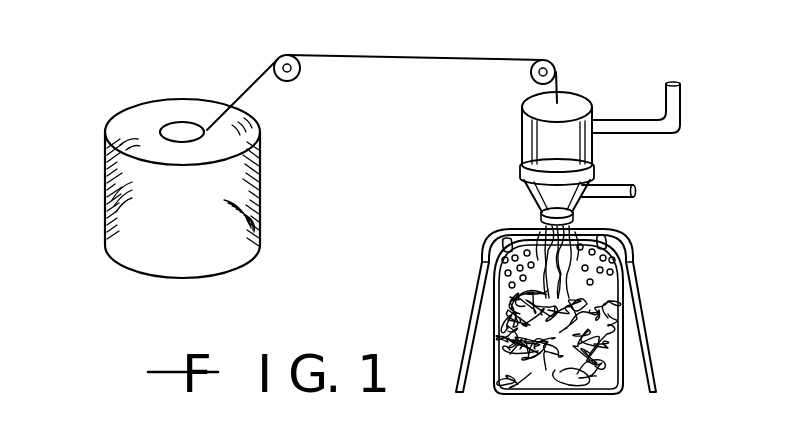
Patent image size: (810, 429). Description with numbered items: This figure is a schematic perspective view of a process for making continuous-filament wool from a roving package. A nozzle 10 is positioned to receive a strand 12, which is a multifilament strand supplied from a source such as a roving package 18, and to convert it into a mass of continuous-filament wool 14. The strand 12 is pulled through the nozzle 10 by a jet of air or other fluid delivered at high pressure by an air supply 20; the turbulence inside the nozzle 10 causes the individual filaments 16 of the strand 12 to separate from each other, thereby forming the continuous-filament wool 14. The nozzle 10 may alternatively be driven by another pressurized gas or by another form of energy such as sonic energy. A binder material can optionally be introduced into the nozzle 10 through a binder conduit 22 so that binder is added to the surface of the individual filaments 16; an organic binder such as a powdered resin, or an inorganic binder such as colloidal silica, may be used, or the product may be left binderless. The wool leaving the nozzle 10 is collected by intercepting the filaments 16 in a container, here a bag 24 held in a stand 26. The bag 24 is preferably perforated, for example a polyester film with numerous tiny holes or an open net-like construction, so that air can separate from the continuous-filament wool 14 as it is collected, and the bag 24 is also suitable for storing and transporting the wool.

The nozzle 10 is at (500, 137).
The strand 12 is at (248, 86).
The continuous-filament wool 14 is at (520, 299).
The individual filaments 16 is at (600, 224).
The roving package 18 is at (104, 214).
The air supply 20 is at (681, 105).
The binder conduit 22 is at (610, 187).
The bag 24 is at (625, 350).
The stand 26 is at (655, 372).